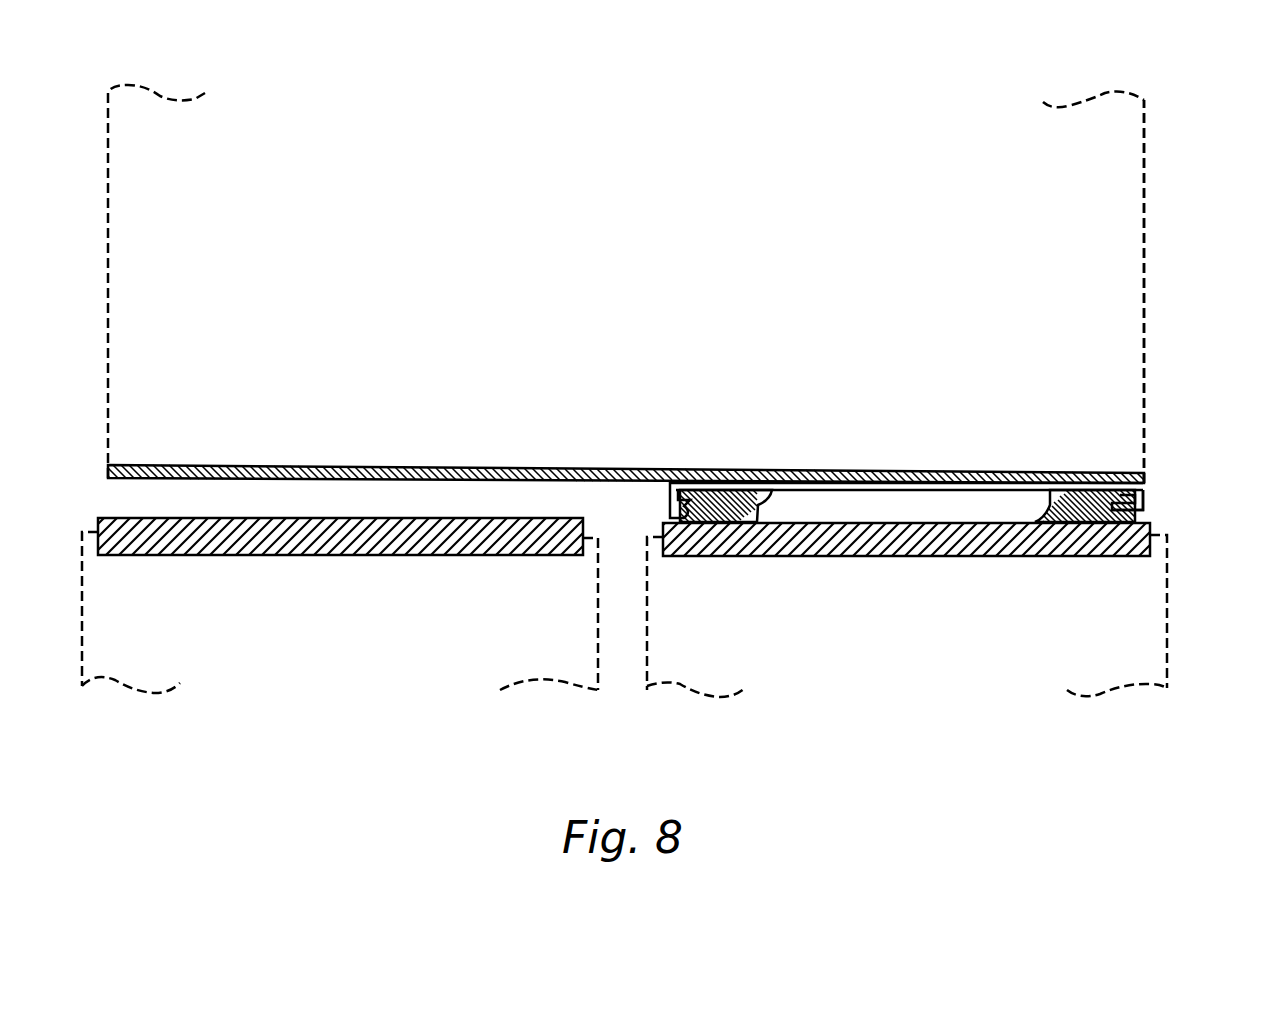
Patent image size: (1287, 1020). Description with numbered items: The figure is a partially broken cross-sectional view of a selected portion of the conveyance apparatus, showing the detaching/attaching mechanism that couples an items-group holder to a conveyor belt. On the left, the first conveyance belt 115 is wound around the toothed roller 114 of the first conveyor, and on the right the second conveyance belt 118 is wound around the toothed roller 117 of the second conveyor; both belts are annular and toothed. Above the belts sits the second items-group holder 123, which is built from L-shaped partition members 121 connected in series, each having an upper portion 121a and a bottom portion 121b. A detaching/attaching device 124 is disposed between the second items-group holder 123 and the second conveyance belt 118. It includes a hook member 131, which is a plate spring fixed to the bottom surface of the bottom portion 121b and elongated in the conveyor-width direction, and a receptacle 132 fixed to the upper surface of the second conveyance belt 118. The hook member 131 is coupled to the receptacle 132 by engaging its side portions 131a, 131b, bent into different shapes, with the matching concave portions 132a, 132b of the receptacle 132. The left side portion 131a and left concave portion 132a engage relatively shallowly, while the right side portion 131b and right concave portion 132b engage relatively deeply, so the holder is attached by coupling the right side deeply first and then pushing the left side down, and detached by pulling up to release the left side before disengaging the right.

The toothed roller 114 is at (537, 680).
The first conveyance belt 115 is at (183, 552).
The toothed roller 117 is at (1097, 687).
The second conveyance belt 118 is at (748, 555).
The partition member 121 is at (1158, 343).
The upper portion of partition member 121a is at (1095, 120).
The bottom portion 121b is at (422, 472).
The second items-group holder 123 is at (1178, 228).
The detaching/attaching device 124 is at (1160, 511).
The hook member 131 is at (905, 479).
The left side portion 131a is at (668, 482).
The right side portion 131b is at (1145, 483).
The receptacle 132 is at (907, 465).
The left concave portion 132a is at (702, 489).
The right concave portion 132b is at (1115, 492).